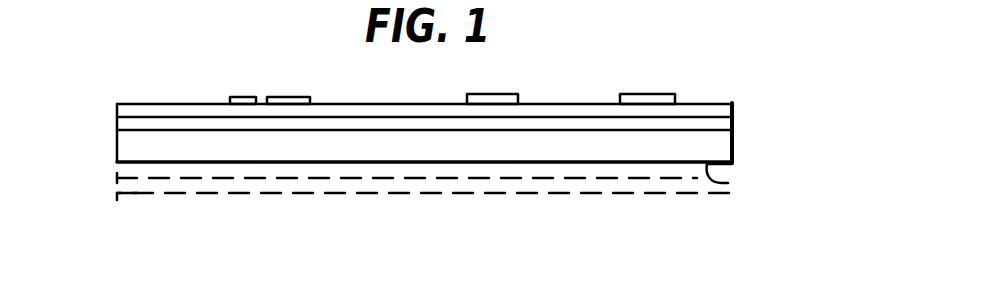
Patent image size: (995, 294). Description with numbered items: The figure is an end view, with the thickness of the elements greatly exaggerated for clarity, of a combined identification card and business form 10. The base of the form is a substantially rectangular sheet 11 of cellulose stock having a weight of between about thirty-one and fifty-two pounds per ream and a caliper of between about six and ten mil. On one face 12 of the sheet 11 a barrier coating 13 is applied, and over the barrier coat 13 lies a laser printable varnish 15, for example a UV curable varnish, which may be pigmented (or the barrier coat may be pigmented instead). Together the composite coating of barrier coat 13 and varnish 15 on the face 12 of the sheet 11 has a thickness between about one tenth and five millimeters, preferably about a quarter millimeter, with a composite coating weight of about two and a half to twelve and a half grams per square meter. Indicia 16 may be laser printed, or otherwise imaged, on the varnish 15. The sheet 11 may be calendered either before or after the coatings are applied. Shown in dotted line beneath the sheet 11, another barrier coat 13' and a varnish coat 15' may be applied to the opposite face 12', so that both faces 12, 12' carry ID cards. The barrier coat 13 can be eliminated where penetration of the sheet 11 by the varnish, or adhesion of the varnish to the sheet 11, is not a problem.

The combined identification card and business form 10 is at (824, 111).
The sheet 11 is at (717, 147).
The face 12 is at (441, 96).
The face 12' is at (750, 180).
The barrier coating 13 is at (391, 131).
The barrier coat 13' is at (371, 190).
The laser printable varnish 15 is at (391, 86).
The varnish coat 15' is at (421, 230).
The indicia 16 is at (245, 97).